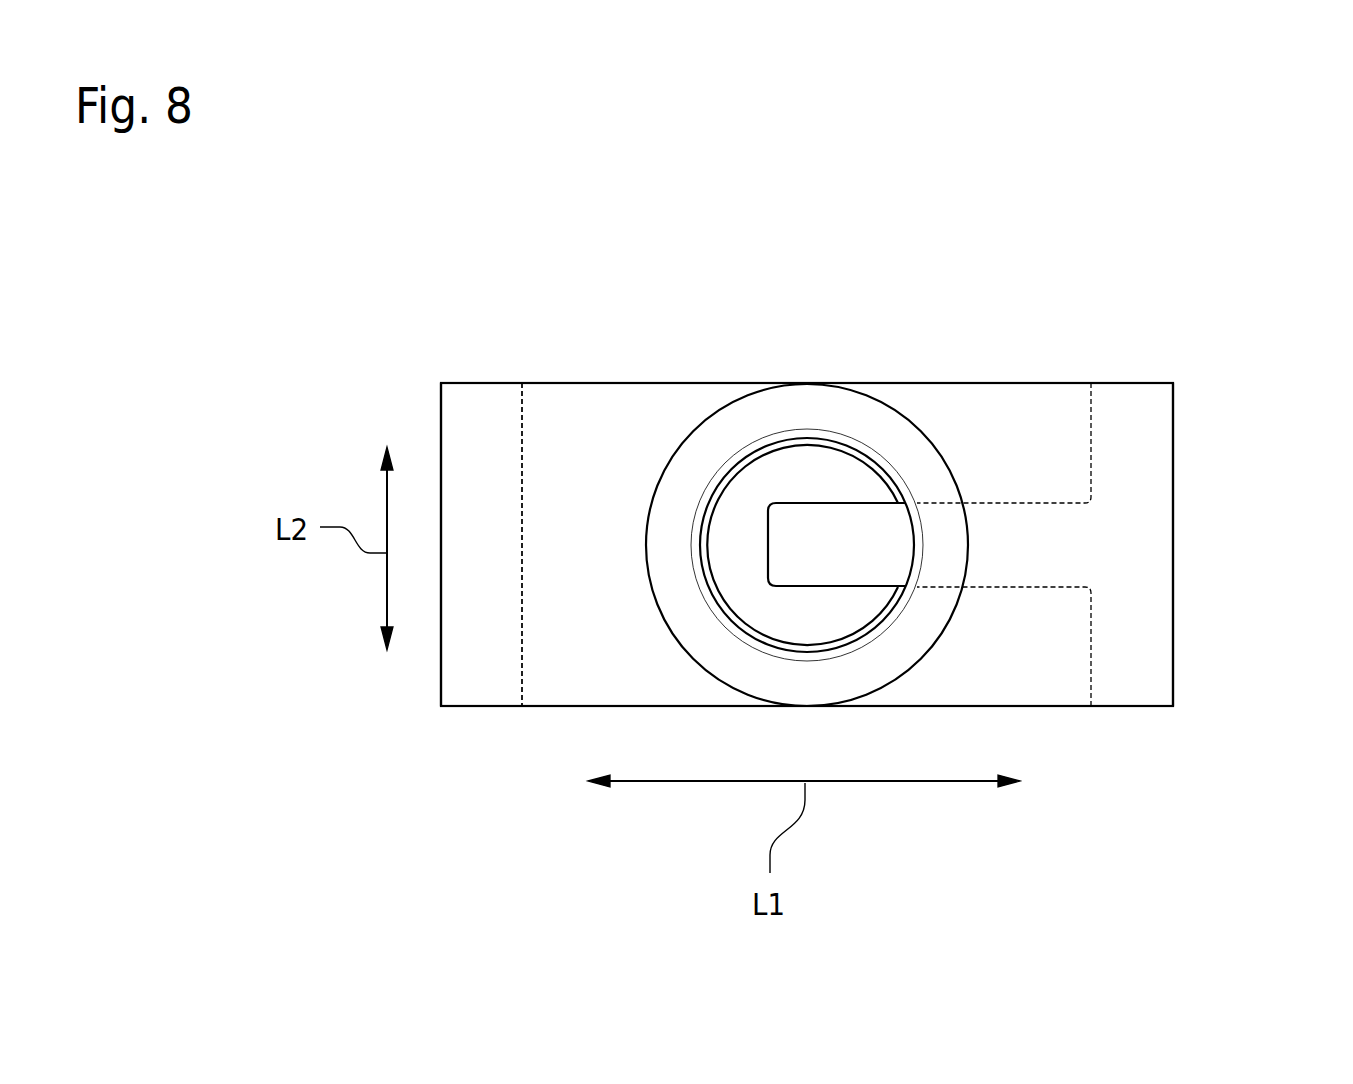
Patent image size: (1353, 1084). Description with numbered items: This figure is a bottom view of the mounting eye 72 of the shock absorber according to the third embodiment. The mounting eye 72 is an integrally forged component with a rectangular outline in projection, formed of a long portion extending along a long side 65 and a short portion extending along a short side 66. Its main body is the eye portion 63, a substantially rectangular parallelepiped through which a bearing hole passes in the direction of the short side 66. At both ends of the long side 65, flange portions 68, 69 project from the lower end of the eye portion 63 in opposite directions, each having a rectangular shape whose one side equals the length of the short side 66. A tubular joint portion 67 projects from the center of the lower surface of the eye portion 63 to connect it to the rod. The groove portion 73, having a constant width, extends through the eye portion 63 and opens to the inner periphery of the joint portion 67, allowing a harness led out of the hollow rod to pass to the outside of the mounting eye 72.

The mounting eye 72 is at (1131, 269).
The short side 66 is at (441, 418).
The flange portion 68 is at (478, 683).
The long side 65 is at (606, 383).
The flange portion 69 is at (1136, 641).
The eye portion 63 is at (1055, 682).
The joint portion 67 is at (867, 418).
The groove portion 73 is at (768, 546).